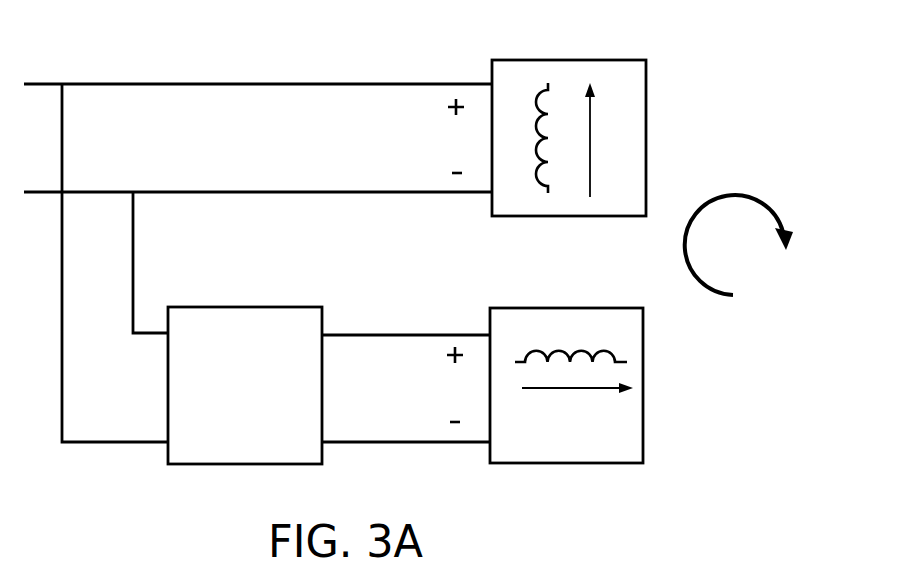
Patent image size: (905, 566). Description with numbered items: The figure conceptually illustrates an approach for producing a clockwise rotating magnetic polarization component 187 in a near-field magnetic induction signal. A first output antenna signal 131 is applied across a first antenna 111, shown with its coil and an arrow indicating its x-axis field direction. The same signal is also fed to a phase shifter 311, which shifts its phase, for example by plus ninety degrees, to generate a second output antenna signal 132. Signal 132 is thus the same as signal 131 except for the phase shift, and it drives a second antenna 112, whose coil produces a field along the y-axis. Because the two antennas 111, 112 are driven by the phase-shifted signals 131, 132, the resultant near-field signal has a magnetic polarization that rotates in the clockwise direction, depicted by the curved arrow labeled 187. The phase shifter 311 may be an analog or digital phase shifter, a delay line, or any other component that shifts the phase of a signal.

The first coil / x-axis actuator 111 is at (615, 59).
The second coil / y-axis actuator 112 is at (611, 308).
The signal 131 is at (258, 138).
The output antenna signal 132 is at (406, 388).
The clockwise rotating magnetic polarization component 187 is at (739, 245).
The phase shifter 311 is at (168, 398).